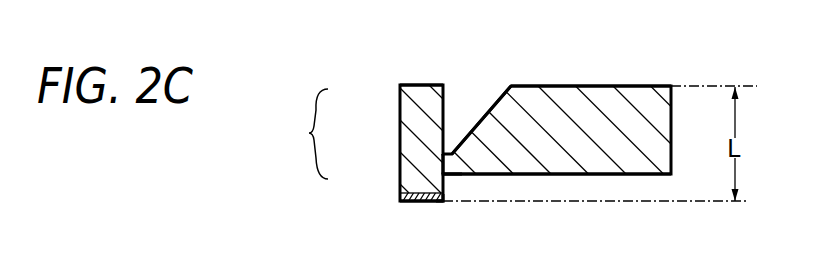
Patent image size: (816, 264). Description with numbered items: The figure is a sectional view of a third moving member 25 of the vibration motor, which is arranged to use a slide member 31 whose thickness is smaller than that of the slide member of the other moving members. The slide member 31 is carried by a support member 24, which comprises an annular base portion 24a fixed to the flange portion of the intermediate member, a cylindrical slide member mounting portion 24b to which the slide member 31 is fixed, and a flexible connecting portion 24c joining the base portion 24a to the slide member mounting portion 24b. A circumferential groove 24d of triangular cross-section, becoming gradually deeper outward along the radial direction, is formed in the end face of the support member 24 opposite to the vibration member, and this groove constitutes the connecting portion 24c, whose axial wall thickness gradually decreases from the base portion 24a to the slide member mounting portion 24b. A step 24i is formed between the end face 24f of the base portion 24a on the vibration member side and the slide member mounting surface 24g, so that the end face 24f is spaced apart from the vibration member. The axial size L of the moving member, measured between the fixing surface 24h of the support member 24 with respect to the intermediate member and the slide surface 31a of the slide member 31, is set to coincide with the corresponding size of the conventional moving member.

The support member 24 is at (392, 112).
The annular base portion 24a is at (541, 113).
The cylindrical slide member mounting portion 24b is at (422, 90).
The flexible connecting portion 24c is at (508, 137).
The circumferential groove 24d is at (455, 132).
The end face of the base portion 24f is at (615, 176).
The slide member mounting surface 24g is at (420, 203).
The fixing surface 24h is at (620, 86).
The step 24i is at (446, 176).
The third moving member 25 is at (298, 148).
The slide member 31 is at (398, 197).
The slide surface 31a is at (437, 204).